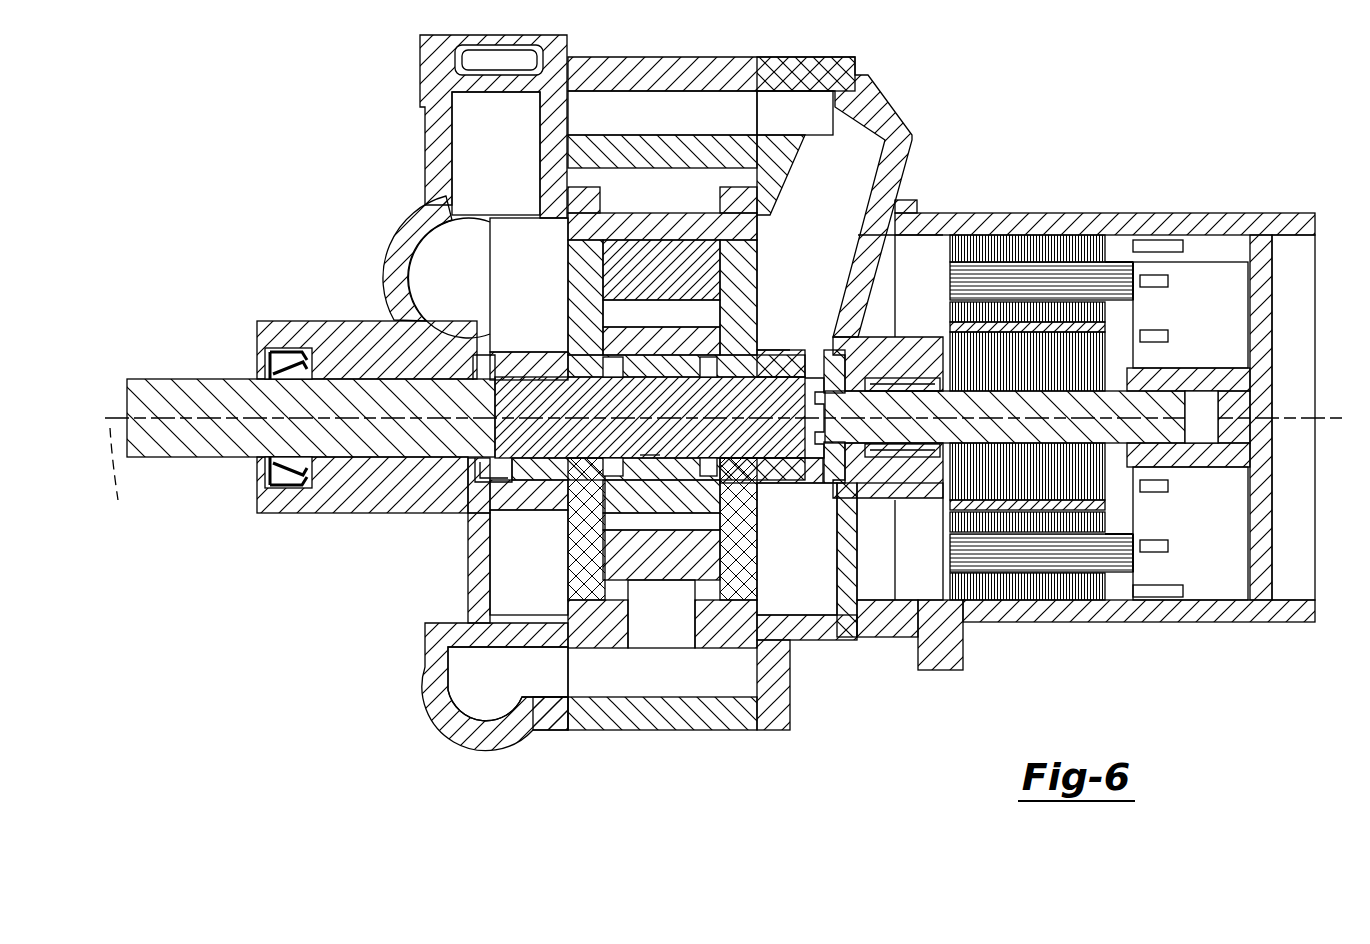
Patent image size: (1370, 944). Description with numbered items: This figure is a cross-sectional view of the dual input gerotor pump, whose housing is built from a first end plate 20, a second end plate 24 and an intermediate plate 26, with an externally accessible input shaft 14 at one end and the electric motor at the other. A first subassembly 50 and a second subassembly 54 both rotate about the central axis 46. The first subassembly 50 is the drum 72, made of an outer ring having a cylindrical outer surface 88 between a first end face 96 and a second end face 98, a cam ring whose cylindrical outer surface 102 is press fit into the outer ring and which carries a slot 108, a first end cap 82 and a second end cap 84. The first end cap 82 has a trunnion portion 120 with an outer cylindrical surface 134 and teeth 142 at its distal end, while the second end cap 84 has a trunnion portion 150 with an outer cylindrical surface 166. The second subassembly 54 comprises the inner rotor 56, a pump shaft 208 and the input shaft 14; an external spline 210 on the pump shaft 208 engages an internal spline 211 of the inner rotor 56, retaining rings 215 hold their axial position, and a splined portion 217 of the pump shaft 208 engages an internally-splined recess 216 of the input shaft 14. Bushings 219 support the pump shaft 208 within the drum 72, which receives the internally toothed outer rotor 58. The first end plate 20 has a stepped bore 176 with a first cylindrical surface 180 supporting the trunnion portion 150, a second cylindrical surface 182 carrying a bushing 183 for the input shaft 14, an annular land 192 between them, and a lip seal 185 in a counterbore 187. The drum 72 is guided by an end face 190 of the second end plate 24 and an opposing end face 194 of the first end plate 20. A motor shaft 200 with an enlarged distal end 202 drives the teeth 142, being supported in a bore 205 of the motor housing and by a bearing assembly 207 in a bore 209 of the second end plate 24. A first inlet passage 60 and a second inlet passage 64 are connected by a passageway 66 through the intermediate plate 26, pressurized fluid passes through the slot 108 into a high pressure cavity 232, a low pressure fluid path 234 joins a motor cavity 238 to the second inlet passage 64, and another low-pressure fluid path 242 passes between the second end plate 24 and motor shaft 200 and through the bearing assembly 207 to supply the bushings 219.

The input shaft 14 is at (163, 390).
The first end plate 20 is at (420, 45).
The second end plate 24 is at (830, 62).
The intermediate plate 26 is at (576, 57).
The central axis 46 is at (107, 478).
The first subassembly 50 is at (668, 213).
The second subassembly 54 is at (612, 455).
The inner rotor 56 is at (695, 522).
The outer rotor 58 is at (720, 553).
The first inlet passage 60 is at (486, 190).
The second inlet passage 64 is at (831, 197).
The passageway 66 is at (636, 128).
The drum 72 is at (708, 213).
The first end cap 82 is at (770, 312).
The second end cap 84 is at (556, 264).
The cylindrical outer surface 88 is at (597, 190).
The first end face 96 is at (560, 213).
The second end face 98 is at (832, 222).
The cylindrical outer surface 102 is at (616, 598).
The slot 108 is at (634, 577).
The trunnion portion 120 is at (702, 408).
The outer cylindrical surface 134 is at (776, 352).
The teeth 142 is at (801, 384).
The trunnion portion 150 is at (543, 478).
The outer cylindrical surface 166 is at (513, 468).
The stepped bore 176 is at (482, 358).
The first cylindrical surface 180 is at (537, 365).
The second cylindrical surface 182 is at (334, 386).
The bushing 183 is at (374, 376).
The lip seal 185 is at (282, 350).
The counterbore 187 is at (264, 484).
The end face 190 is at (758, 218).
The annular land 192 is at (476, 490).
The end face 194 is at (597, 192).
The motor shaft 200 is at (1170, 400).
The enlarged distal end 202 is at (858, 342).
The bore 205 is at (1197, 462).
The bearing assembly 207 is at (906, 458).
The pump shaft 208 is at (760, 487).
The bore 209 is at (940, 392).
The external spline 210 is at (703, 377).
The internal spline 211 is at (652, 372).
The retaining rings 215 is at (619, 451).
The internally-splined recess 216 is at (505, 486).
The splined portion 217 is at (532, 378).
The bushings 219 is at (596, 468).
The high pressure cavity 232 is at (712, 170).
The low pressure fluid path 234 is at (846, 566).
The motor cavity 238 is at (1198, 312).
The low-pressure fluid path 242 is at (858, 460).